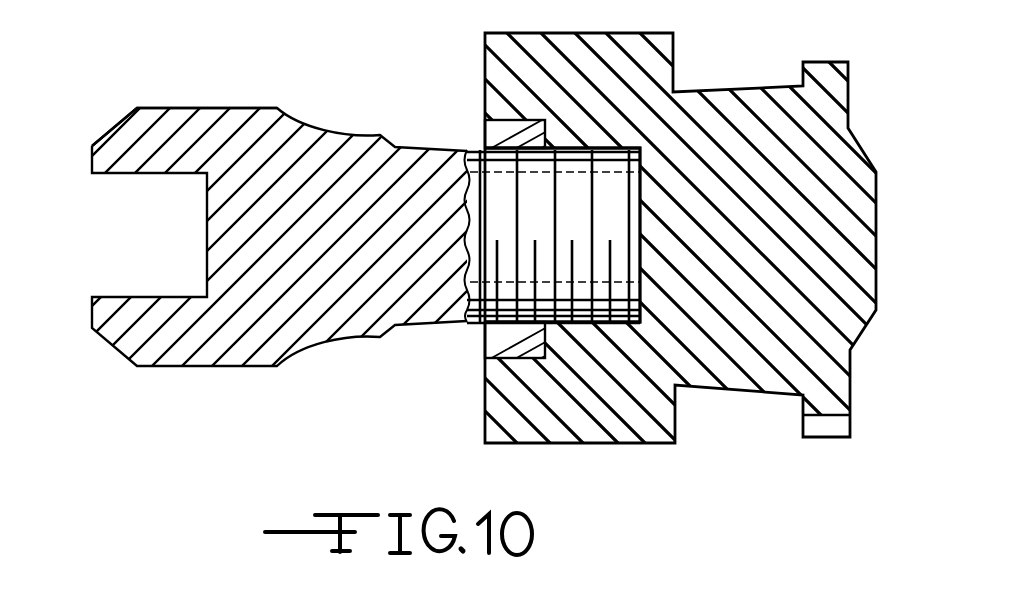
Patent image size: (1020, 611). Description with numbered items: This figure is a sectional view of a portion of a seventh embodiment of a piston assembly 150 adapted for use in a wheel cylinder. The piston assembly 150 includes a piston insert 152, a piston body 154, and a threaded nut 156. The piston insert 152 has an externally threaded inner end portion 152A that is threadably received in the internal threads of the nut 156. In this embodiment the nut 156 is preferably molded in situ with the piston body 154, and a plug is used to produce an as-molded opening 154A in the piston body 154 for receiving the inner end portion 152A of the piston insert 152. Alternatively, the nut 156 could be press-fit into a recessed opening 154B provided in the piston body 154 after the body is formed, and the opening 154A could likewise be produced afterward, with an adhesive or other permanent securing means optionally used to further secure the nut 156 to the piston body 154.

The piston assembly 150 is at (246, 96).
The piston insert 152 is at (208, 366).
The externally threaded inner end portion 152A is at (612, 183).
The piston body 154 is at (636, 444).
The opening 154A is at (581, 310).
The recessed opening 154B is at (485, 137).
The threaded nut 156 is at (498, 346).